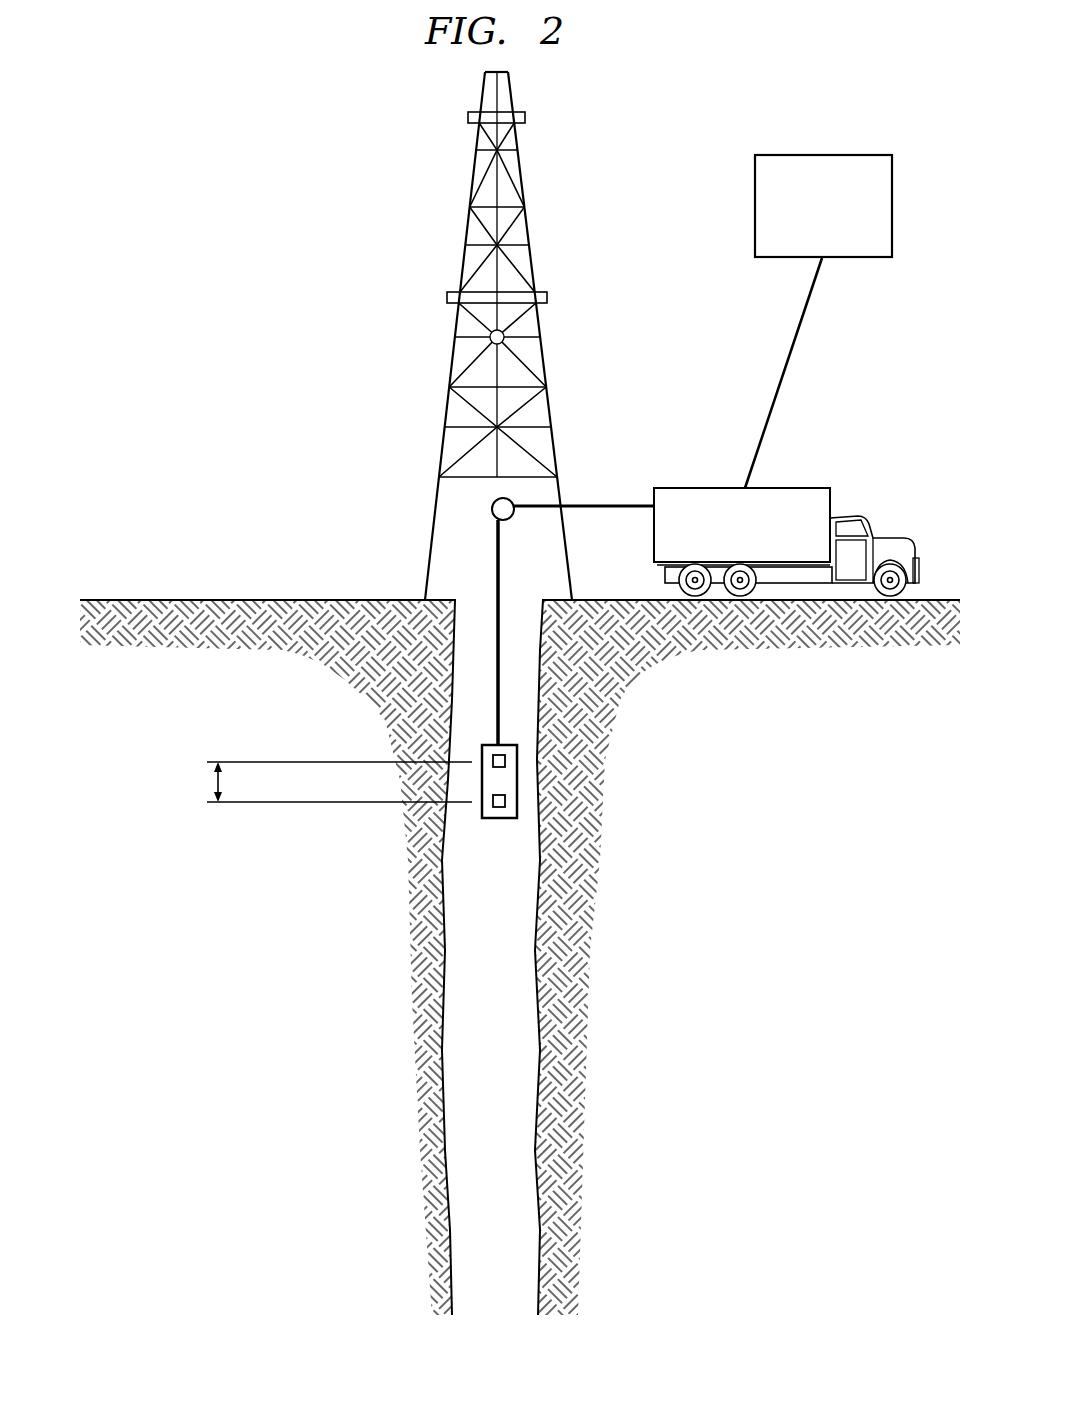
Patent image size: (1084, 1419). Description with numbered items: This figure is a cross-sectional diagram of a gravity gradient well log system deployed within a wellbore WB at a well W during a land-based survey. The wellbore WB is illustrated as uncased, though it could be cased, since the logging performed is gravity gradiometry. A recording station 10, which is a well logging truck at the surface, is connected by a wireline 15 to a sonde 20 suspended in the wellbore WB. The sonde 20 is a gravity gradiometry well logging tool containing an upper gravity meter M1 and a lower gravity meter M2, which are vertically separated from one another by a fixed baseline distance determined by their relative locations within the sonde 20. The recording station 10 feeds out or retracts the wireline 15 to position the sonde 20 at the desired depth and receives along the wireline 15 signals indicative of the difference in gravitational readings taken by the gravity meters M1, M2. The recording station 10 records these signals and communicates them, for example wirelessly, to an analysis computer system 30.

The recording station 10 is at (815, 488).
The wireline 15 is at (599, 505).
The sonde 20 is at (510, 746).
The analysis computer system 30 is at (855, 155).
The well W is at (465, 230).
The wellbore WB is at (445, 946).
The upper gravity meter M1 is at (495, 755).
The lower gravity meter M2 is at (500, 808).